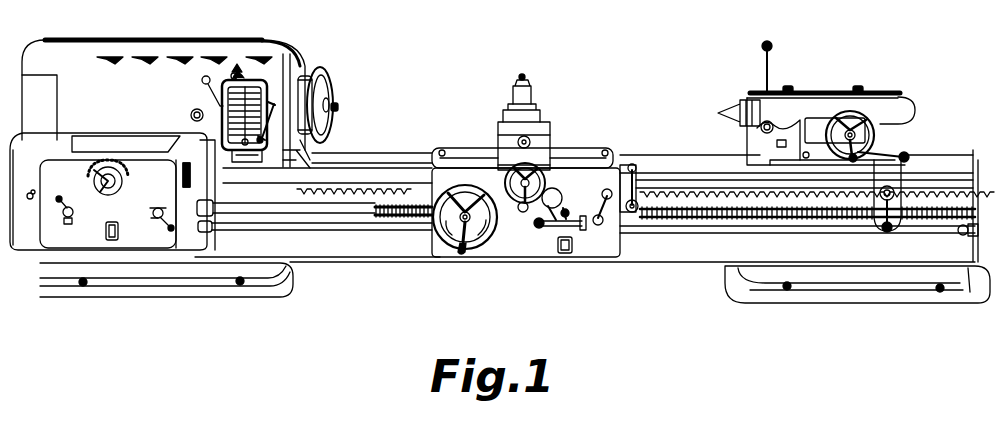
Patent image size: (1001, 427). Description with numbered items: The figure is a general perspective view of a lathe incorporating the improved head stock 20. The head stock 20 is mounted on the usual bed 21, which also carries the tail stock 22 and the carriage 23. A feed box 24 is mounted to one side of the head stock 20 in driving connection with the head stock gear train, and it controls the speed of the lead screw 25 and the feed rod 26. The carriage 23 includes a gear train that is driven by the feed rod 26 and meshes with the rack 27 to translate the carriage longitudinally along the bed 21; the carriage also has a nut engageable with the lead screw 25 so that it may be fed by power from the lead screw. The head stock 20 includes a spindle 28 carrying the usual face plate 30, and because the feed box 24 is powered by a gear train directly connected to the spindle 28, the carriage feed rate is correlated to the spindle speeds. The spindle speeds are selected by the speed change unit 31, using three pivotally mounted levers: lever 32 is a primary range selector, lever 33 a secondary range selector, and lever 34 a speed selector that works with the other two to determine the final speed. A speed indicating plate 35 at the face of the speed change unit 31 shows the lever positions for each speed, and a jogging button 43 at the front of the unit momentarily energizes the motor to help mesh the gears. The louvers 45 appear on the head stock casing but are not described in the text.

The head stock 20 is at (283, 30).
The ventilating louvers 45 is at (165, 68).
The speed change unit 31 is at (270, 80).
The primary range selector lever 32 is at (236, 70).
The speed indicating plate 35 is at (222, 88).
The secondary range selector lever 33 is at (205, 84).
The speed selector lever 34 is at (262, 144).
The jogging button 43 is at (240, 144).
The face plate 30 is at (330, 79).
The spindle 28 is at (345, 103).
The feed box 24 is at (55, 232).
The bed 21 is at (400, 158).
The rack 27 is at (666, 192).
The lead screw 25 is at (355, 212).
The feed rod 26 is at (384, 226).
The carriage 23 is at (568, 148).
The tail stock 22 is at (822, 92).